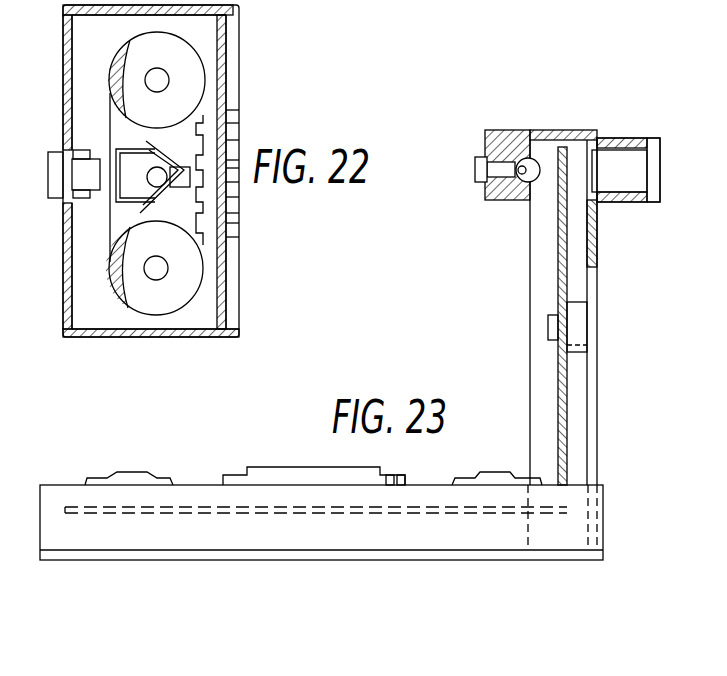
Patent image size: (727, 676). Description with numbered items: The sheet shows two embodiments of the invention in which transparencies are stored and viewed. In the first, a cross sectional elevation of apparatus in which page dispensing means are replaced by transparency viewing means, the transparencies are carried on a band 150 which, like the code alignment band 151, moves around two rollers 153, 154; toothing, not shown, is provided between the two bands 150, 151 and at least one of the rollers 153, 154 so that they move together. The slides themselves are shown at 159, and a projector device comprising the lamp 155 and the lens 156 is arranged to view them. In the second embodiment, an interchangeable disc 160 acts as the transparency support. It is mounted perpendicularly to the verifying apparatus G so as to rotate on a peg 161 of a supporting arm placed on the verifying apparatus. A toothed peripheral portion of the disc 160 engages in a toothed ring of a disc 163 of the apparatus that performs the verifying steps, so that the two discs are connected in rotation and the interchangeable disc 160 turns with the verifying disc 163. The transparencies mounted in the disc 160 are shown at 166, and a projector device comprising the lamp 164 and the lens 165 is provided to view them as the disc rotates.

In FIG. 22, the band 150 is at (111, 222).
In FIG. 22, the code alignment band 151 is at (203, 108).
In FIG. 22, the roller 153 is at (193, 62).
In FIG. 22, the roller 154 is at (193, 295).
In FIG. 22, the lamp 155 is at (150, 170).
In FIG. 22, the lens 156 is at (55, 152).
In FIG. 22, the slides 159 is at (238, 205).
In FIG. 23, the interchangeable disc 160 is at (558, 258).
In FIG. 23, the peg 161 is at (548, 328).
In FIG. 23, the disc 163 is at (482, 515).
In FIG. 23, the lamp 164 is at (542, 185).
In FIG. 23, the lens 165 is at (653, 145).
In FIG. 23, the transparencies 166 is at (563, 170).
In FIG. 23, the verifying apparatus G is at (183, 568).